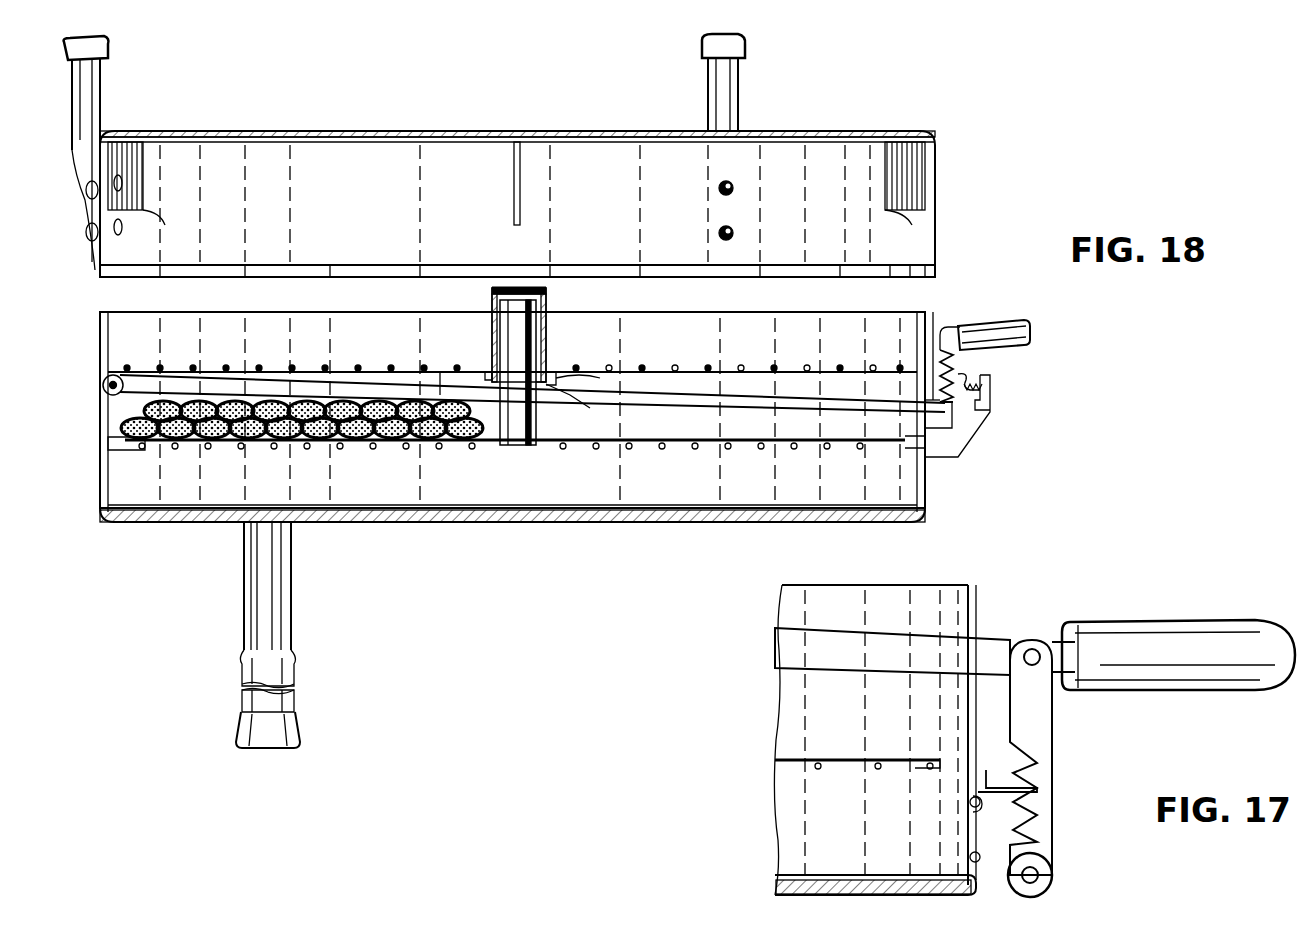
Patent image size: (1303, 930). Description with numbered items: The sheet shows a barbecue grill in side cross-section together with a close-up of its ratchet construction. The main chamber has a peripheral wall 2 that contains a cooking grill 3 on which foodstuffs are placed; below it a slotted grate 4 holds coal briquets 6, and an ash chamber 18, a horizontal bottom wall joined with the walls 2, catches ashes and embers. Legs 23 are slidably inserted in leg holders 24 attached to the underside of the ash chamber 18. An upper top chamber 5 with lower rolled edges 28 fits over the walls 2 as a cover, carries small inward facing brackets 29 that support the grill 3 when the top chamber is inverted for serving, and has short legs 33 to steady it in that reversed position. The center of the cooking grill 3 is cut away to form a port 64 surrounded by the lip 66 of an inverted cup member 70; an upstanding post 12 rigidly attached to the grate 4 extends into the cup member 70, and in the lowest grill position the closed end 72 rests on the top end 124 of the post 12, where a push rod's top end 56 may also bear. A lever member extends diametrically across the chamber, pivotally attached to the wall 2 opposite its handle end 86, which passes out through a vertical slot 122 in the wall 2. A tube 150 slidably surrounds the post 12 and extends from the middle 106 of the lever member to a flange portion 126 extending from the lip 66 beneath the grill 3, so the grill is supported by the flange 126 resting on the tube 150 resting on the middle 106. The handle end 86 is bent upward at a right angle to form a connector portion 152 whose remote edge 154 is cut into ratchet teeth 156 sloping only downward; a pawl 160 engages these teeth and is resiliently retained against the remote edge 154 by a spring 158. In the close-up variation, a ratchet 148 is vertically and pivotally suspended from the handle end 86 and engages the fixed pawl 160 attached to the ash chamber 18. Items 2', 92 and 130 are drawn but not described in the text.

In FIG. 18, the peripheral wall 2 is at (512, 417).
In FIG. 17, the peripheral wall 2 is at (896, 729).
In FIG. 18, the tray wall extension 2' is at (946, 339).
In FIG. 18, the cooking grill 3 is at (688, 368).
In FIG. 18, the slotted grate 4 is at (680, 445).
In FIG. 17, the slotted grate 4 is at (835, 758).
In FIG. 18, the upper top chamber 5 is at (458, 130).
In FIG. 18, the coal briquets 6 is at (272, 408).
In FIG. 18, the upstanding post 12 is at (540, 423).
In FIG. 18, the ash chamber 18 is at (712, 522).
In FIG. 17, the ash chamber 18 is at (836, 880).
In FIG. 18, the legs 23 is at (292, 706).
In FIG. 18, the leg holders 24 is at (270, 525).
In FIG. 18, the lower rolled edges 28 is at (935, 265).
In FIG. 18, the inward facing brackets 29 is at (143, 208).
In FIG. 18, the short legs 33 is at (102, 118).
In FIG. 18, the top end 56 is at (546, 302).
In FIG. 18, the port 64 is at (490, 372).
In FIG. 18, the lip 66 is at (548, 372).
In FIG. 18, the inverted cup member 70 is at (500, 326).
In FIG. 18, the closed end 72 is at (492, 294).
In FIG. 18, the handle end 86 is at (848, 405).
In FIG. 17, the handle end 86 is at (1000, 640).
In FIG. 18, the bottom plate 92 is at (578, 522).
In FIG. 18, the middle 106 is at (432, 390).
In FIG. 18, the vertical slot 122 is at (905, 440).
In FIG. 18, the top end 124 is at (530, 288).
In FIG. 18, the flange portion 126 is at (595, 372).
In FIG. 18, the assembly direction arrow 130 is at (738, 355).
In FIG. 17, the ratchet 148 is at (1052, 745).
In FIG. 18, the tube 150 is at (589, 408).
In FIG. 18, the connector portion 152 is at (942, 378).
In FIG. 18, the remote edge 154 is at (948, 327).
In FIG. 18, the ratchet teeth 156 is at (975, 345).
In FIG. 18, the spring 158 is at (968, 400).
In FIG. 18, the pawl 160 is at (962, 380).
In FIG. 17, the pawl 160 is at (996, 786).